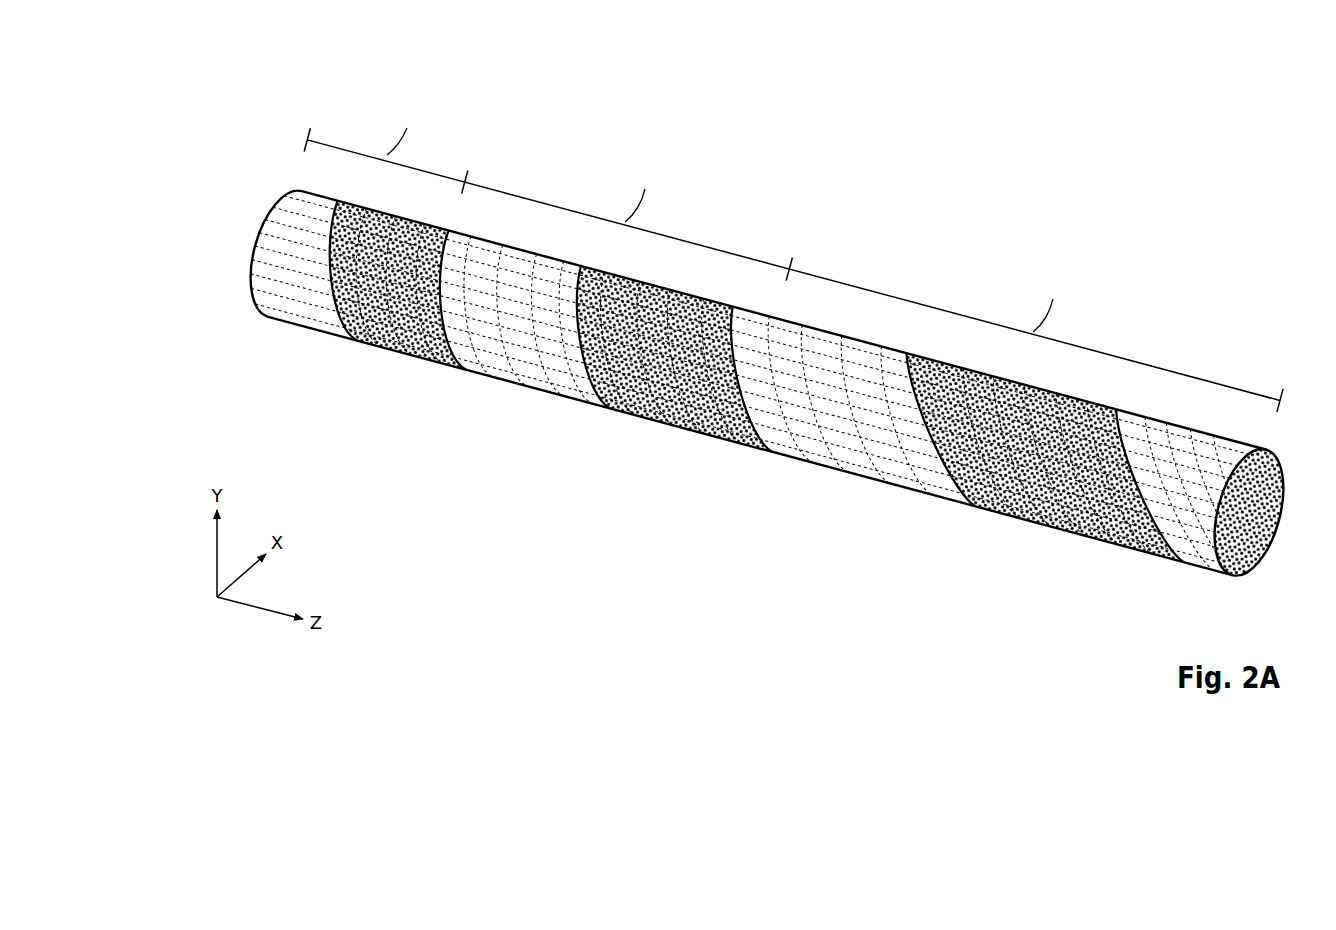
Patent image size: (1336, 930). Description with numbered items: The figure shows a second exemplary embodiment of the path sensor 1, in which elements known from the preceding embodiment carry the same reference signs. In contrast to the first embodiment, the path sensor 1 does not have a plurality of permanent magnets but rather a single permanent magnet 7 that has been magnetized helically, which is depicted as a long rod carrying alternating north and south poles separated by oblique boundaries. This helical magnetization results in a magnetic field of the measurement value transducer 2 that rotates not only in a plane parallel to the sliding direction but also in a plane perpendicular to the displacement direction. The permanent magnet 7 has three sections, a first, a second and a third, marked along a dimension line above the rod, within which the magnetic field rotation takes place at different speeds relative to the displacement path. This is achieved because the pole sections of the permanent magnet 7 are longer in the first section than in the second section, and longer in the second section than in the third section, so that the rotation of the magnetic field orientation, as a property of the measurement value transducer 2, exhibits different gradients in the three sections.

The path sensor 1 is at (253, 118).
The measurement value transducer 2 is at (240, 268).
The permanent magnet 7 is at (1201, 573).